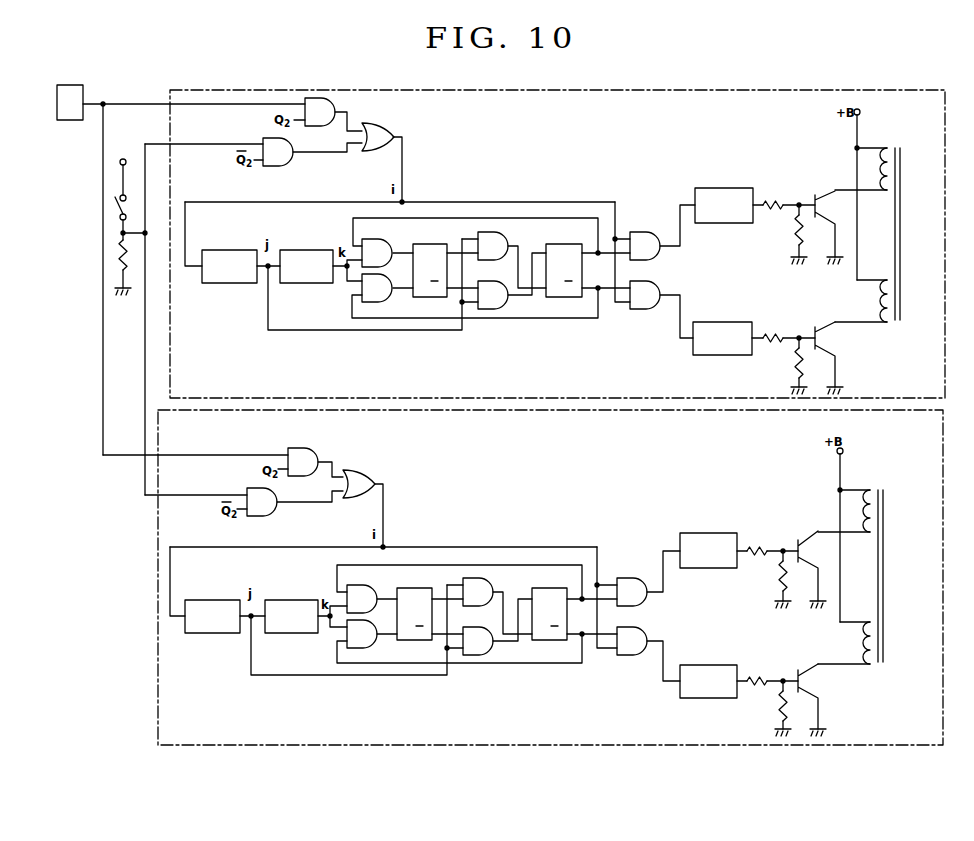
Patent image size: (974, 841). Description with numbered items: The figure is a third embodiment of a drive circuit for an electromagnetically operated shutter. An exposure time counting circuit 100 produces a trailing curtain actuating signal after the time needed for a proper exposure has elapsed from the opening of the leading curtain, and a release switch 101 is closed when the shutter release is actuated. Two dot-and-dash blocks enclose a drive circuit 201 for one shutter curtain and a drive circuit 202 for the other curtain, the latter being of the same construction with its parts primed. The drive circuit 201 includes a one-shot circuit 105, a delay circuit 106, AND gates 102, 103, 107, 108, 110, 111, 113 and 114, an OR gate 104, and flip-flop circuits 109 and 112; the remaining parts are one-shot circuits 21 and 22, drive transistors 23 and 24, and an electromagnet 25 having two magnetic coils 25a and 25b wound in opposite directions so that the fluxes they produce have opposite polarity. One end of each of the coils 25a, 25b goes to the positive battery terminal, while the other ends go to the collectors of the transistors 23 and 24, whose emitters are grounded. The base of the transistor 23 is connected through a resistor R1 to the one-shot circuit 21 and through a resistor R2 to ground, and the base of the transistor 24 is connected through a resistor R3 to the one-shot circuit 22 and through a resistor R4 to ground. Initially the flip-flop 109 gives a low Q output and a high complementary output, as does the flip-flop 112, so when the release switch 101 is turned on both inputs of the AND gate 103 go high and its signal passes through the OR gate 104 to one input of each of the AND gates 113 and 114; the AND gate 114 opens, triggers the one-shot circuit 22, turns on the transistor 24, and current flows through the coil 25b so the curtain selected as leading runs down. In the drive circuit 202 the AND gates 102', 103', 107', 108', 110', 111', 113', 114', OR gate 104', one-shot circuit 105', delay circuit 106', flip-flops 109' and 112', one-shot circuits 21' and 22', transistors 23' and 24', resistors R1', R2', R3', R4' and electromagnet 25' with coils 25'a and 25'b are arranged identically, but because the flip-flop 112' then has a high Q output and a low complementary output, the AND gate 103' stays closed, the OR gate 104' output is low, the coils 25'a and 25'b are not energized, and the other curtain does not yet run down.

The exposure time counting circuit 100 is at (70, 102).
The release switch 101 is at (113, 210).
The AND gate 102 is at (320, 112).
The AND gate 103 is at (278, 152).
The OR gate 104 is at (390, 131).
The one-shot circuit 105 is at (229, 266).
The delay circuit 106 is at (306, 266).
The AND gate 107 is at (377, 253).
The AND gate 108 is at (377, 288).
The flip-flop circuit 109 is at (433, 261).
The AND gate 110 is at (493, 246).
The AND gate 111 is at (493, 295).
The flip-flop circuit 112 is at (568, 261).
The AND gate 113 is at (645, 246).
The AND gate 114 is at (645, 295).
The one-shot circuit 21 is at (724, 205).
The one-shot circuit 22 is at (722, 338).
The drive transistor 23 is at (829, 227).
The drive transistor 24 is at (829, 358).
The electromagnet 25 is at (878, 239).
The magnetic coil 25a is at (887, 147).
The magnetic coil 25b is at (887, 324).
The resistor R1 is at (784, 197).
The resistor R2 is at (791, 234).
The resistor R3 is at (783, 330).
The resistor R4 is at (791, 366).
The drive circuit 201 is at (945, 152).
The AND gate 102' is at (312, 453).
The AND gate 103' is at (275, 499).
The OR gate 104' is at (365, 474).
The one-shot circuit 105' is at (212, 616).
The delay circuit 106' is at (291, 616).
The AND gate 107' is at (373, 592).
The AND gate 108' is at (373, 642).
The flip-flop circuit 109' is at (421, 606).
The AND gate 110' is at (491, 589).
The AND gate 111' is at (495, 647).
The flip-flop circuit 112' is at (557, 606).
The AND gate 113' is at (638, 583).
The AND gate 114' is at (638, 633).
The one-shot circuit 21' is at (708, 550).
The one-shot circuit 22' is at (708, 681).
The drive transistor 23' is at (814, 569).
The drive transistor 24' is at (814, 700).
The electromagnet 25' is at (864, 582).
The magnetic coil 25'a is at (852, 498).
The magnetic coil 25'b is at (854, 661).
The resistor R1' is at (767, 542).
The resistor R2' is at (775, 579).
The resistor R3' is at (767, 672).
The resistor R4' is at (775, 708).
The drive circuit 202 is at (943, 445).